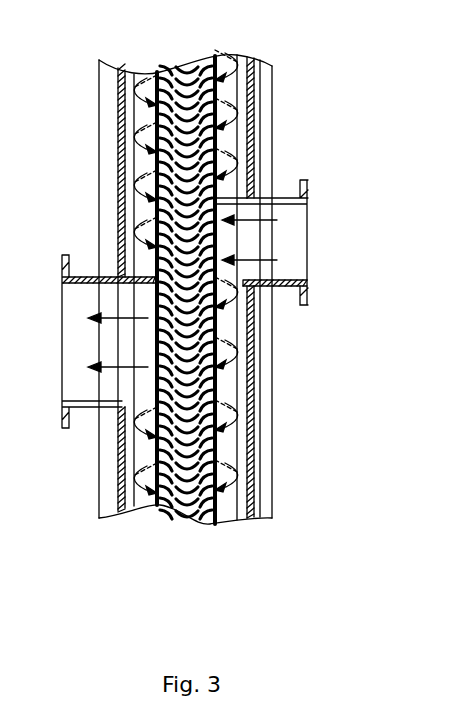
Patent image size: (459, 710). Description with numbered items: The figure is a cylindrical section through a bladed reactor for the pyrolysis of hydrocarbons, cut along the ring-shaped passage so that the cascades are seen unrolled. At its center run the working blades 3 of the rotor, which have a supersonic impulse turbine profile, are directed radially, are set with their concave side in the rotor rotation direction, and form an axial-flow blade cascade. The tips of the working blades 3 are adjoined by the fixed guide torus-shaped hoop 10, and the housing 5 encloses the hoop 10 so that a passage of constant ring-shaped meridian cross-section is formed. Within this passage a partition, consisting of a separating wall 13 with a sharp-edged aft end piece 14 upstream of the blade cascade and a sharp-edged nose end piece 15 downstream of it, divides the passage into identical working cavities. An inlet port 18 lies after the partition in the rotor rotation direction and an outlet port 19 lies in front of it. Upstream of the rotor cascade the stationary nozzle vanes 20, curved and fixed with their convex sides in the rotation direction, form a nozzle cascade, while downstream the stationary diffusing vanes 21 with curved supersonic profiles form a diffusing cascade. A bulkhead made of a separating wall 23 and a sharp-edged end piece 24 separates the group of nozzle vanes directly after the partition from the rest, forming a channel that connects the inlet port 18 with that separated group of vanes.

The working blades 3 is at (181, 507).
The housing 5 is at (225, 108).
The guide torus-shaped hoop 10 is at (130, 122).
The separating wall 13 is at (152, 278).
The aft end piece 14 is at (218, 298).
The nose end piece 15 is at (150, 283).
The inlet port 18 is at (293, 264).
The outlet port 19 is at (75, 388).
The stationary nozzle vanes 20 is at (205, 72).
The stationary diffusing vanes 21 is at (168, 72).
The separating wall 23 is at (240, 194).
The end piece 24 is at (218, 207).